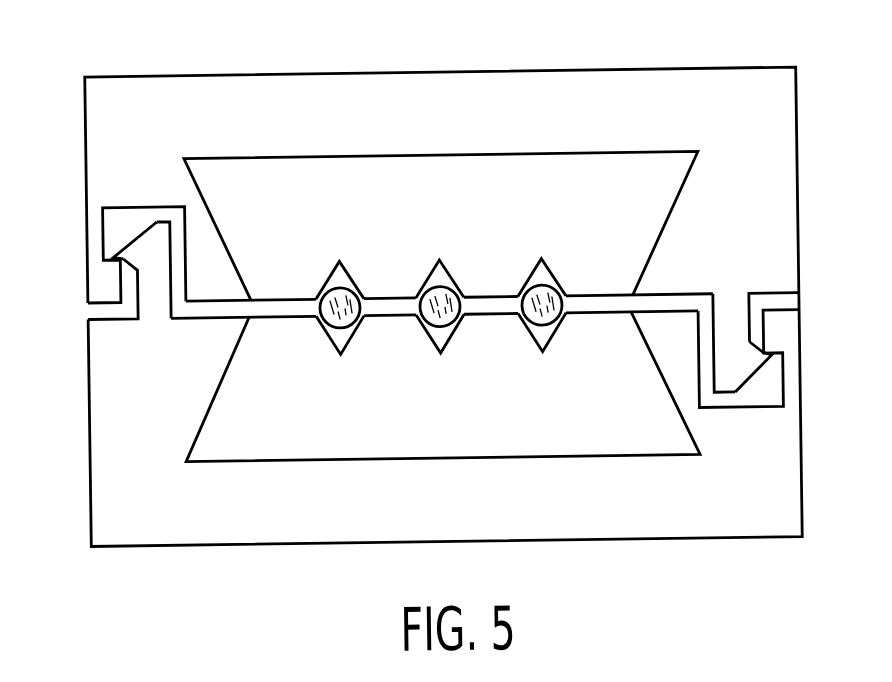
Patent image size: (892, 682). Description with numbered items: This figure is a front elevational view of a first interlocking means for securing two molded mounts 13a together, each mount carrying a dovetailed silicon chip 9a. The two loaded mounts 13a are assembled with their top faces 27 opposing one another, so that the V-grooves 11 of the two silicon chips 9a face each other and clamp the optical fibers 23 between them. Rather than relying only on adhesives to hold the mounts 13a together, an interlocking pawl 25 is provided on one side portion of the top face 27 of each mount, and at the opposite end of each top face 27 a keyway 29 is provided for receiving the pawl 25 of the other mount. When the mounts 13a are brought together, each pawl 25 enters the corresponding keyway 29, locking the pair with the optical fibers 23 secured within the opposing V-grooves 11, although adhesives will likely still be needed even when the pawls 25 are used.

The molded mount 13a is at (762, 122).
The silicon chip 9a is at (644, 202).
The V-groove 11 is at (356, 283).
The optical fiber 23 is at (318, 301).
The interlocking pawl 25 is at (152, 294).
The top face 27 is at (188, 315).
The keyway 29 is at (114, 251).